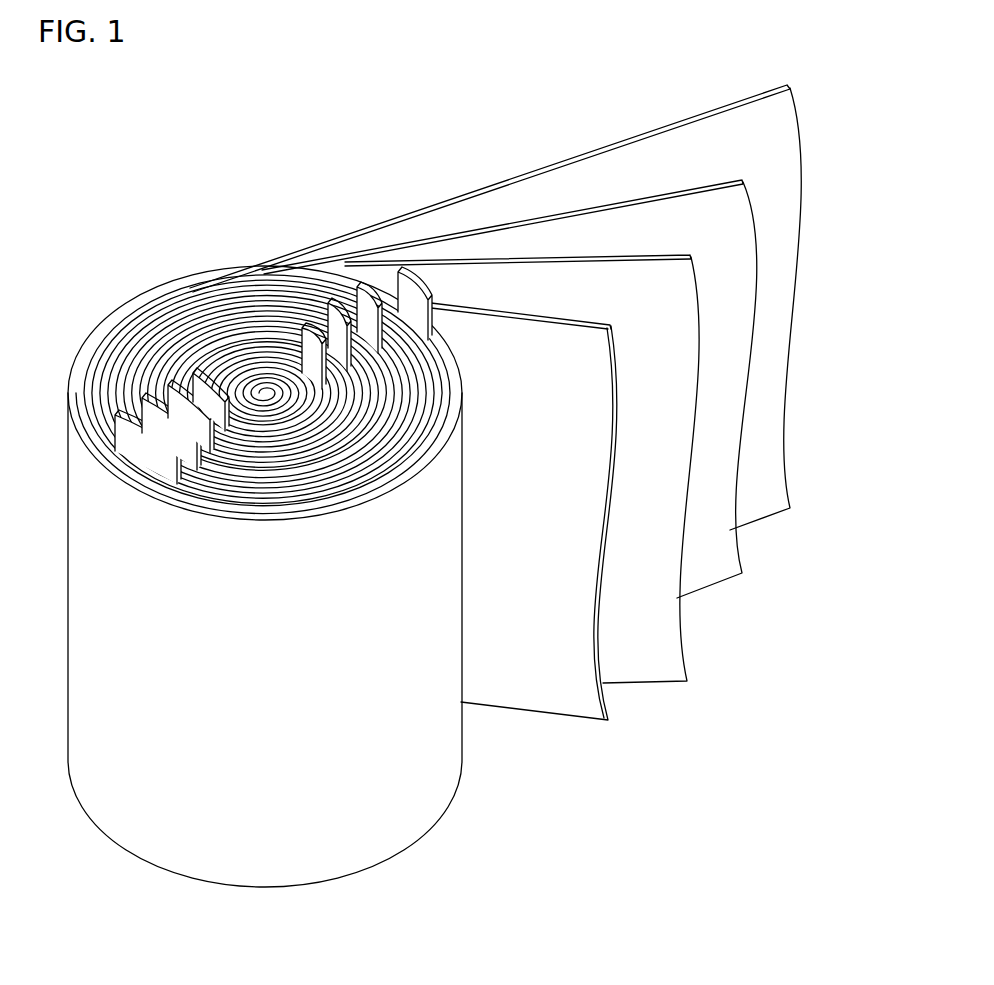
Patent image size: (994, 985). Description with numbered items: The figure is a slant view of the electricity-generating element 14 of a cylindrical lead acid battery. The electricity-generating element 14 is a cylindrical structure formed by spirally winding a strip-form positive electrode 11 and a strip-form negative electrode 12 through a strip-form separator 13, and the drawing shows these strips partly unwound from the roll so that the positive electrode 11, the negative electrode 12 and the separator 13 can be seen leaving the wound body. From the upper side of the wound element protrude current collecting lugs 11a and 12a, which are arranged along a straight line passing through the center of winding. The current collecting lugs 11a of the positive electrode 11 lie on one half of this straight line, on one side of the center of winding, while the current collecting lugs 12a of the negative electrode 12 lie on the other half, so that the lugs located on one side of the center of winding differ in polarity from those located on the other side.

The positive electrode 11 is at (729, 216).
The current collecting lugs of the positive electrode 11a is at (396, 286).
The negative electrode 12 is at (594, 385).
The current collecting lugs of the negative electrode 12a is at (224, 414).
The separator 13 is at (783, 142).
The electricity-generating element 14 is at (470, 796).